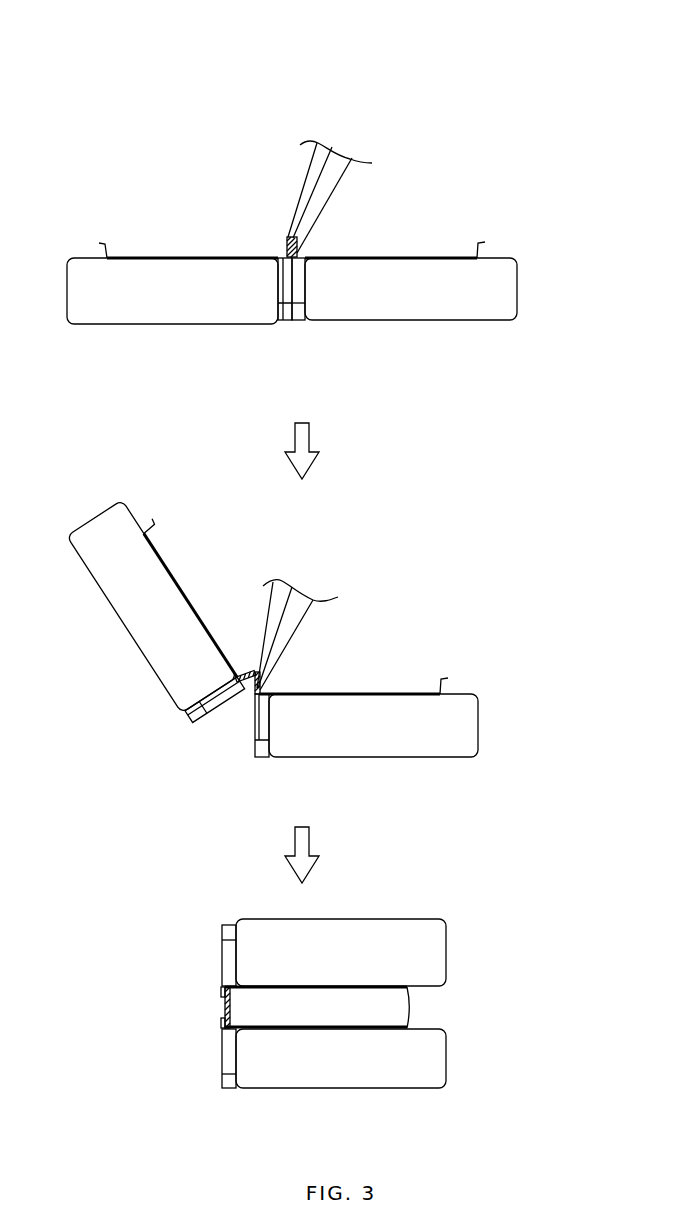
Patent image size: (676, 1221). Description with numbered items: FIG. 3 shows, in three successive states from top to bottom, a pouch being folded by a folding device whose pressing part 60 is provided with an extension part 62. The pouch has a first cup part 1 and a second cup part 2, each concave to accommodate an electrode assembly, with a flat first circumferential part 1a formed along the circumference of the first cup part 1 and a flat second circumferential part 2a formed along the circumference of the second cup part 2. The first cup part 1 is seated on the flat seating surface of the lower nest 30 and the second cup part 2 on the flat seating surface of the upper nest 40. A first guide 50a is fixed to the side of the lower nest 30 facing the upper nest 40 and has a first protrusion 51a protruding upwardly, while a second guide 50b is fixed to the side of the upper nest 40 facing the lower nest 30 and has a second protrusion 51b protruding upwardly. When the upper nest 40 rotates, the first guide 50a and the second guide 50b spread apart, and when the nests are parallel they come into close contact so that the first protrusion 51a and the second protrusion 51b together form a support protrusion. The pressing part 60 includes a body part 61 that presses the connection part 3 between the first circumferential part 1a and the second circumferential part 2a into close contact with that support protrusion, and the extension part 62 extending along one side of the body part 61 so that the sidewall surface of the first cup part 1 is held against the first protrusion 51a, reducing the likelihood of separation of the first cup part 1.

The first cup part 1 is at (393, 258).
The first circumferential part 1a is at (479, 243).
The second cup part 2 is at (192, 257).
The second circumferential part 2a is at (104, 243).
The connection part 3 is at (230, 1007).
The lower nest 30 is at (440, 316).
The upper nest 40 is at (160, 316).
The first guide 50a is at (255, 733).
The second guide 50b is at (186, 712).
The first protrusion 51a is at (223, 1018).
The second protrusion 51b is at (223, 992).
The pressing part 60 is at (295, 613).
The body part 61 is at (313, 184).
The extension part 62 is at (343, 163).